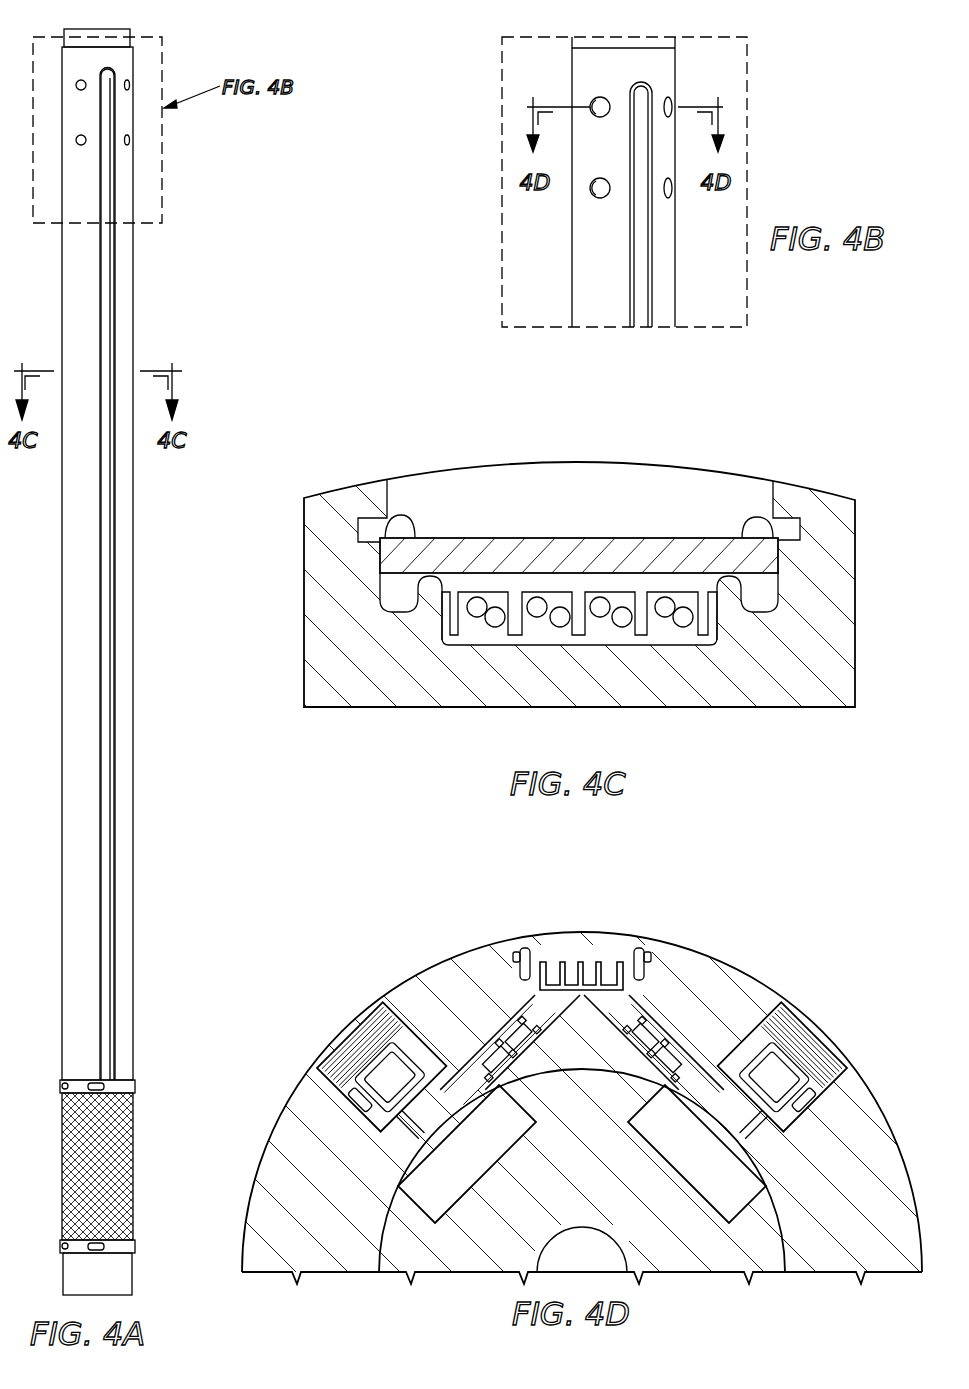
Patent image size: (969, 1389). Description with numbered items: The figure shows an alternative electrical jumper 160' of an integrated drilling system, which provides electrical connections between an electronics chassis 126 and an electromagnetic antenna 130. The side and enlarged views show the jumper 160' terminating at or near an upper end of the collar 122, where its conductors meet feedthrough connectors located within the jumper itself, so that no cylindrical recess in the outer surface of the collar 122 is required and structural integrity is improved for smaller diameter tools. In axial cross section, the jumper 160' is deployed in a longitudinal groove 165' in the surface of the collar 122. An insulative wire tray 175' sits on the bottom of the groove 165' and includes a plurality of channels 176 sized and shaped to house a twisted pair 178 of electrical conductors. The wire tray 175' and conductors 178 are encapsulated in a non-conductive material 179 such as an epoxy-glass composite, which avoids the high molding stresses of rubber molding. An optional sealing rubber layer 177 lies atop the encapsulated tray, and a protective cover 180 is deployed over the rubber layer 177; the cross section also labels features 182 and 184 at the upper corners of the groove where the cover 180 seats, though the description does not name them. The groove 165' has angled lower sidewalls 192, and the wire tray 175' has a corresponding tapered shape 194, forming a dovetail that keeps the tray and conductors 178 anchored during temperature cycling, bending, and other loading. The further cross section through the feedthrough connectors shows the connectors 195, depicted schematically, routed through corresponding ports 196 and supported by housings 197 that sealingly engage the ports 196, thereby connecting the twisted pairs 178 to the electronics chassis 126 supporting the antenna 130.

In FIG. 4A, the collar 122 is at (128, 950).
In FIG. 4B, the collar 122 is at (670, 82).
In FIG. 4C, the collar 122 is at (560, 690).
In FIG. 4D, the collar 122 is at (828, 1237).
In FIG. 4D, the electronics chassis 126 is at (648, 1247).
In FIG. 4A, the electromagnetic antenna 130 is at (134, 1168).
In FIG. 4A, the jumper 160' is at (146, 574).
In FIG. 4B, the jumper 160' is at (683, 204).
In FIG. 4D, the jumper 160' is at (582, 929).
In FIG. 4C, the longitudinal groove 165' is at (659, 674).
In FIG. 4C, the insulative wire tray 175' is at (579, 671).
In FIG. 4C, the channels 176 is at (456, 637).
In FIG. 4C, the sealing rubber layer 177 is at (786, 554).
In FIG. 4C, the twisted pair of electrical conductors 178 is at (468, 600).
In FIG. 4C, the non-conductive material 179 is at (620, 590).
In FIG. 4C, the protective cover 180 is at (526, 509).
In FIG. 4C, the notch 182 is at (788, 528).
In FIG. 4C, the ledge 184 is at (802, 530).
In FIG. 4C, the angled lower sidewalls 192 is at (722, 650).
In FIG. 4C, the tapered shape 194 is at (686, 573).
In FIG. 4D, the feedthrough connectors 195 is at (518, 984).
In FIG. 4D, the ports 196 is at (672, 1038).
In FIG. 4D, the housings 197 is at (712, 1015).